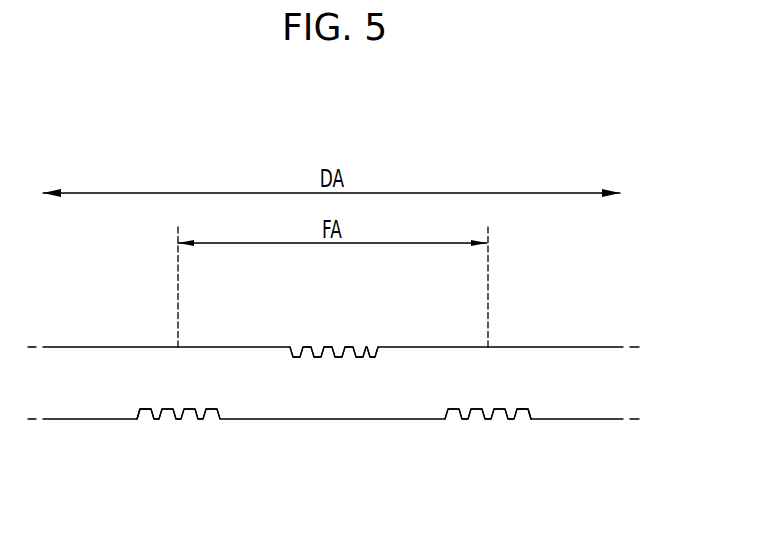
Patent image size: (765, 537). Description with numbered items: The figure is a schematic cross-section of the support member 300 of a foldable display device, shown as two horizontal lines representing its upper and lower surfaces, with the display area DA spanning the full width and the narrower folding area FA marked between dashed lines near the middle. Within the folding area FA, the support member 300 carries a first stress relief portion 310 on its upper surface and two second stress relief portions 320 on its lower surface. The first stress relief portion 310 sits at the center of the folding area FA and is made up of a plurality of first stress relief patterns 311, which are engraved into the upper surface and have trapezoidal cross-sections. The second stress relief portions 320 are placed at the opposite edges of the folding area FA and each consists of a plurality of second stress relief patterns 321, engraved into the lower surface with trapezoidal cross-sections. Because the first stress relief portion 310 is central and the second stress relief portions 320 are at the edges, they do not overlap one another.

The support member 300 is at (645, 348).
The first stress relief portion 310 is at (377, 343).
The first stress relief pattern 311 is at (376, 357).
The second stress relief portion 320 is at (222, 424).
The second stress relief pattern 321 is at (138, 411).